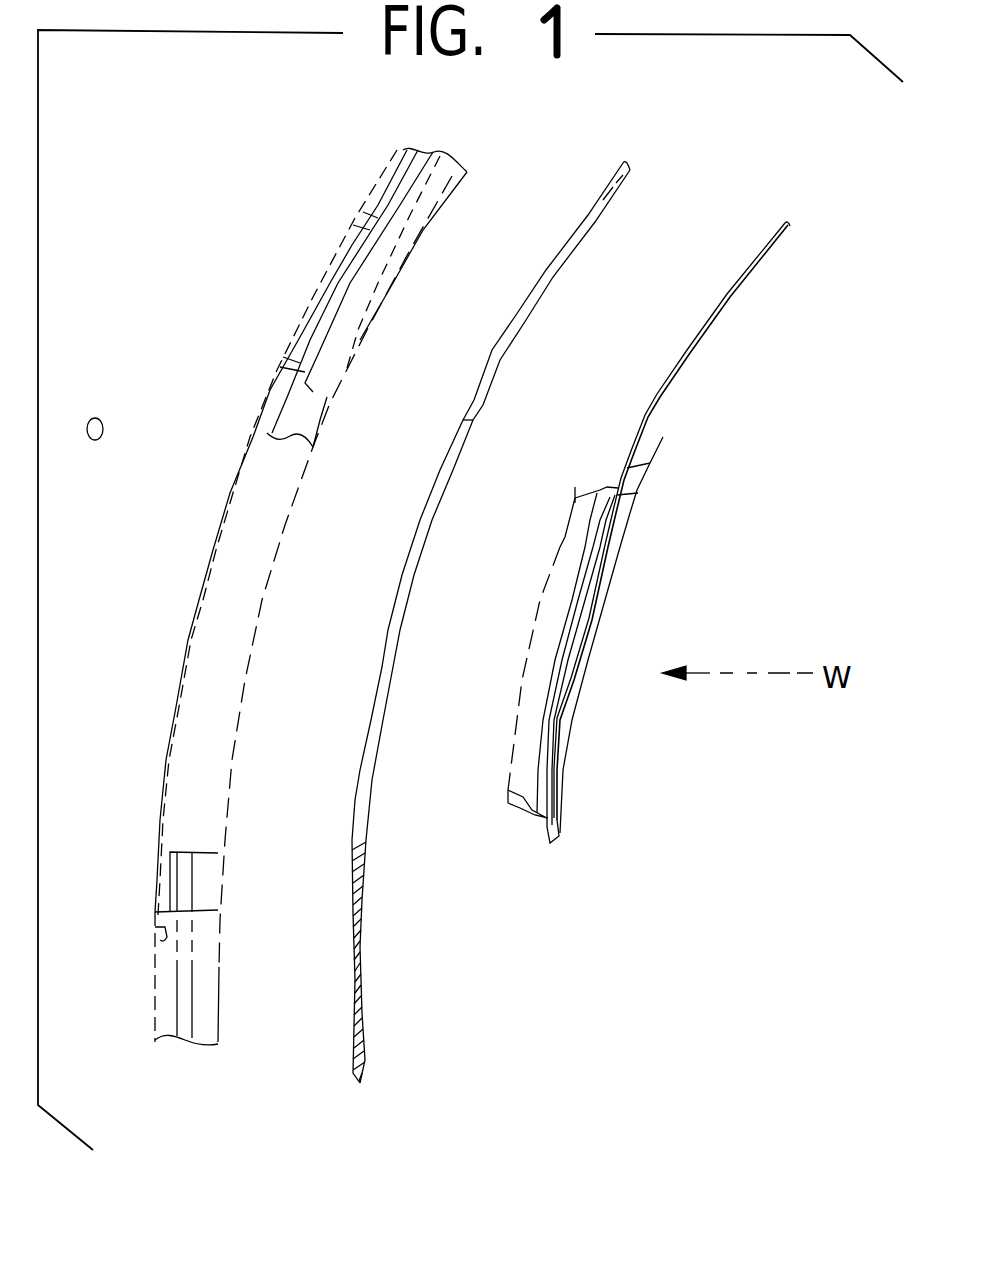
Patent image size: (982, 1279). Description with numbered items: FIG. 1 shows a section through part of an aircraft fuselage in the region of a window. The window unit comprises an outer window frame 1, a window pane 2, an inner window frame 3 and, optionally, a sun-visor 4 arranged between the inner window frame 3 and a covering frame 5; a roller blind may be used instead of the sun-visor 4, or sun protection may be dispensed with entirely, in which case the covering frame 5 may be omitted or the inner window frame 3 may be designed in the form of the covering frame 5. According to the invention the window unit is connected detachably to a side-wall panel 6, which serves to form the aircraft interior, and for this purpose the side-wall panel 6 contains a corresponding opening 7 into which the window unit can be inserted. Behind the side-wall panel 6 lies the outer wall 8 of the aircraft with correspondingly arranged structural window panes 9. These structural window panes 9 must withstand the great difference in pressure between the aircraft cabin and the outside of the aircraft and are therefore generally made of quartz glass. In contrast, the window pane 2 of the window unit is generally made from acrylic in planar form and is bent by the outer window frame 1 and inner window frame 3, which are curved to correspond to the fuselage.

The outer window frame 1 is at (523, 775).
The window pane 2 is at (548, 755).
The inner window frame 3 is at (580, 630).
The sun-visor 4 is at (730, 297).
The covering frame 5 is at (618, 512).
The side-wall panel 6 is at (613, 187).
The opening 7 is at (380, 667).
The outer wall 8 is at (357, 278).
The structural window panes 9 is at (230, 573).